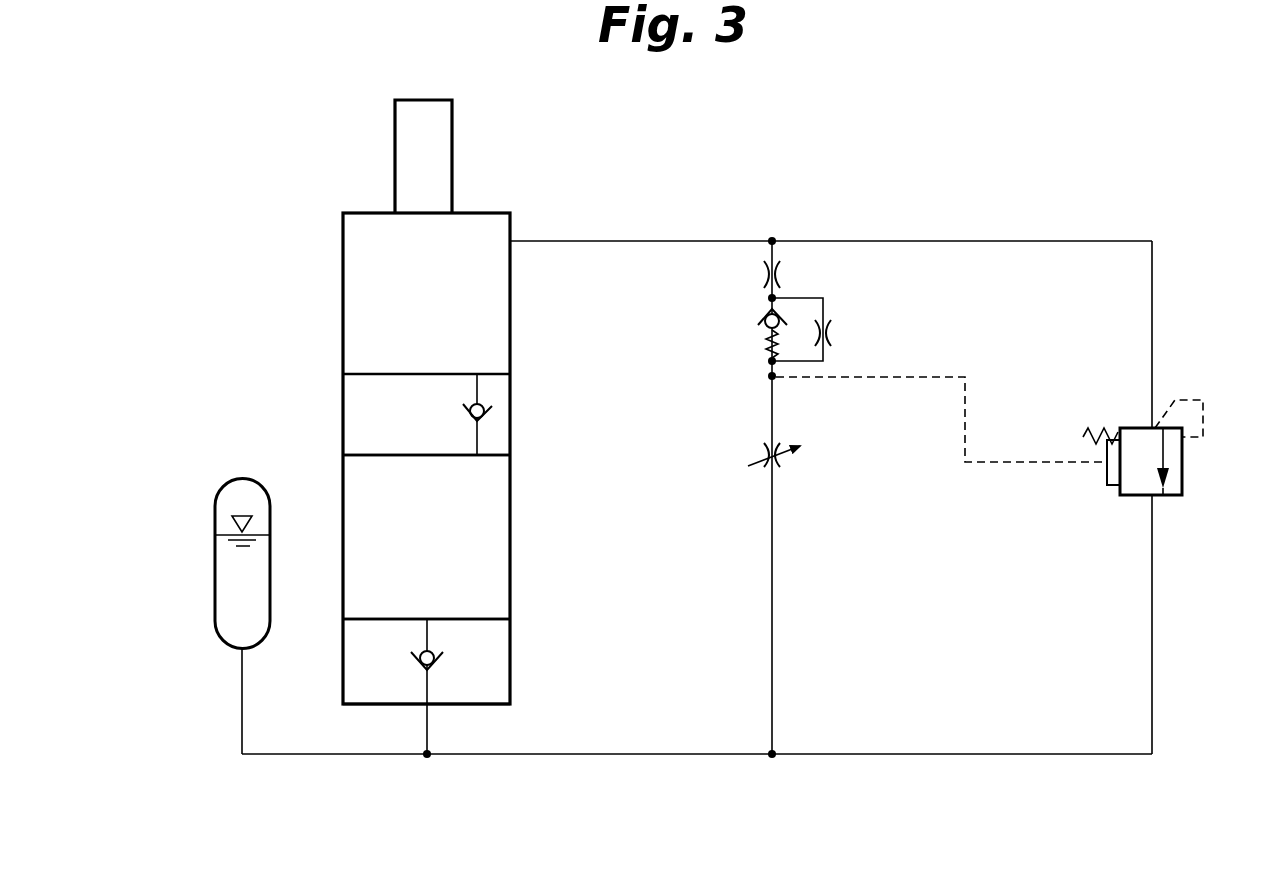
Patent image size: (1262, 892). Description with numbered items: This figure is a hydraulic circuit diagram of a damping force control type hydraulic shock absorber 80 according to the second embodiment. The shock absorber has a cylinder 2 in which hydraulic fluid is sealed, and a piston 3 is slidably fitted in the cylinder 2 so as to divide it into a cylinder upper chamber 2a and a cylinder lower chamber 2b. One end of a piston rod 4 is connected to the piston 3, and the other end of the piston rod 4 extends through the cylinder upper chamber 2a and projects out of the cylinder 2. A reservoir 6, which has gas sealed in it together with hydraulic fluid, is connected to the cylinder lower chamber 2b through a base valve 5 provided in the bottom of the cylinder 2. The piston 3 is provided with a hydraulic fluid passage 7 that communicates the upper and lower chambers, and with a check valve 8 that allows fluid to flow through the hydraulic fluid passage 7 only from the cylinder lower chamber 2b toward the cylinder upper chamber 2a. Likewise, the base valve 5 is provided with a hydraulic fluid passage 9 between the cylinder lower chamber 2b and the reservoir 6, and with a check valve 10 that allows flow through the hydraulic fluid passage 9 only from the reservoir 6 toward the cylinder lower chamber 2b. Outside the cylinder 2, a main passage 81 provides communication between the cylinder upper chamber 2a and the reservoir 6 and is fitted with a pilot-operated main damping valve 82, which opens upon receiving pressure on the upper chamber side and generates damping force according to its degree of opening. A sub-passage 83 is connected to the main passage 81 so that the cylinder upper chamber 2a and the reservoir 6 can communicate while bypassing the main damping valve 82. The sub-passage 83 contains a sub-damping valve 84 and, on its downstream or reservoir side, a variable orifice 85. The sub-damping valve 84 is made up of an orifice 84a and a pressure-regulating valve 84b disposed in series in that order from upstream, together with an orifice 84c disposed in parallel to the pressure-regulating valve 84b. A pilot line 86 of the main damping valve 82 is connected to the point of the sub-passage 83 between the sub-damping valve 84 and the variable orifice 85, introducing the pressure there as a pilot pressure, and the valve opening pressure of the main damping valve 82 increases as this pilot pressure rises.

The cylinder 2 is at (343, 222).
The cylinder upper chamber 2a is at (362, 287).
The cylinder lower chamber 2b is at (385, 510).
The piston 3 is at (362, 400).
The piston rod 4 is at (433, 133).
The base valve 5 is at (483, 668).
The reservoir 6 is at (215, 520).
The hydraulic fluid passage 7 is at (478, 386).
The check valve 8 is at (486, 416).
The hydraulic fluid passage 9 is at (427, 630).
The check valve 10 is at (438, 660).
The damping force control type hydraulic shock absorber 80 is at (945, 192).
The main passage 81 is at (1153, 268).
The pilot-operated main damping valve 82 is at (1182, 472).
The sub-passage 83 is at (770, 398).
The sub-damping valve 84 is at (786, 308).
The orifice 84a is at (784, 270).
The pressure-regulating valve 84b is at (765, 325).
The orifice 84c is at (836, 333).
The variable orifice 85 is at (762, 450).
The pilot line 86 is at (957, 378).